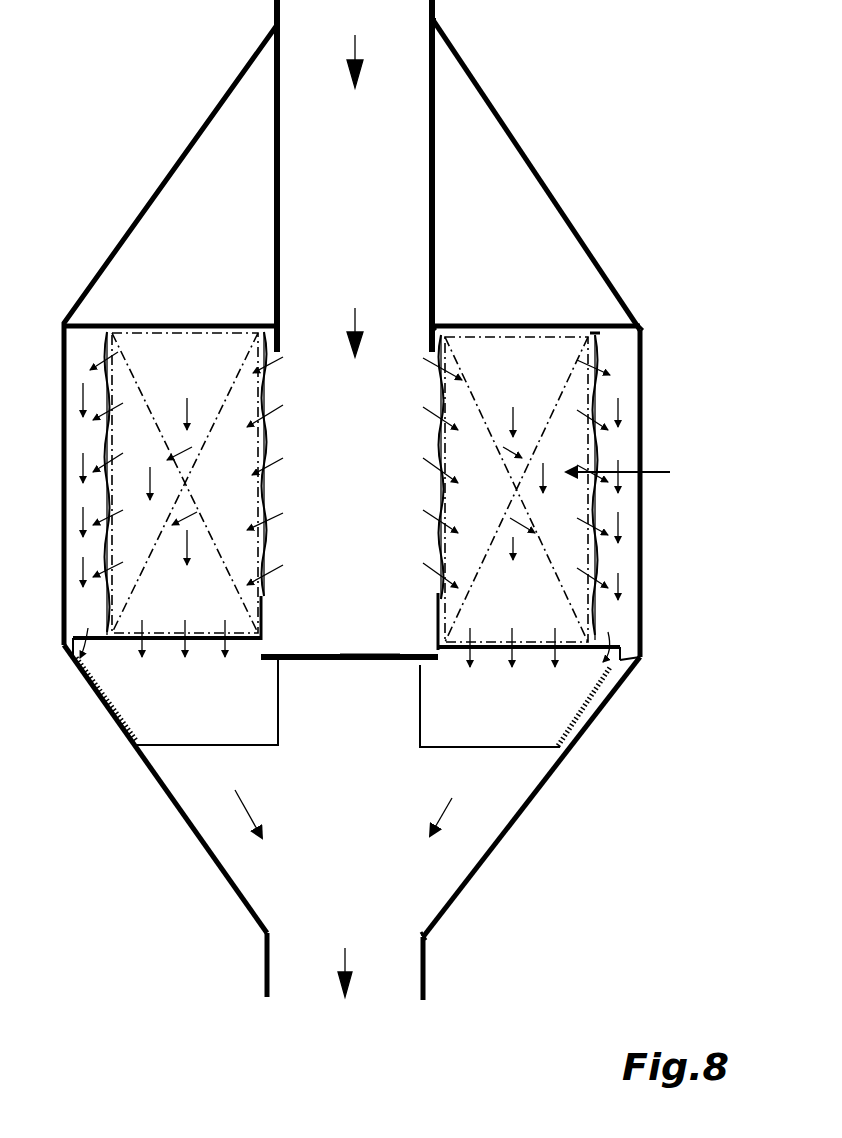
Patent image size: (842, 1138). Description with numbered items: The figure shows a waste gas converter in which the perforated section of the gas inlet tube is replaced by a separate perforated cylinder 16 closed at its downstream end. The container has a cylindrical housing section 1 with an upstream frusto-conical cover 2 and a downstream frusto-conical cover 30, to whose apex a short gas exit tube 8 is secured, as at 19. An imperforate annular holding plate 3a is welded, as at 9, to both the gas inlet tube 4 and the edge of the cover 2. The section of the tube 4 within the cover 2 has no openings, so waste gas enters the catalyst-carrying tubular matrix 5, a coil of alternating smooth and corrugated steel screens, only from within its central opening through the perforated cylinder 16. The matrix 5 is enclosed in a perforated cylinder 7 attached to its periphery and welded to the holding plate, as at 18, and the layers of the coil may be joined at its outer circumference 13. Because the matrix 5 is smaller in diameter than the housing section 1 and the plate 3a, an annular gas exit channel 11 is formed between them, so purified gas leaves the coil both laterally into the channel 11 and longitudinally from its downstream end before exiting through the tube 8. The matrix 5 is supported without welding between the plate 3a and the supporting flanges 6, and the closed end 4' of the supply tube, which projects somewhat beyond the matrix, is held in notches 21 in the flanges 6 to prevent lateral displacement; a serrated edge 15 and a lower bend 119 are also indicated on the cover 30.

The cylindrical housing section 1 is at (640, 515).
The frusto-conical cover 2 is at (472, 76).
The annular holding plate 3a is at (533, 326).
The gas inlet tube 4 is at (425, 176).
The closed downstream end of the tube 4' is at (370, 676).
The catalyst-carrying tubular matrix 5 is at (627, 468).
The supporting flanges 6 is at (585, 665).
The perforated cylinder 7 is at (595, 617).
The gas exit tube 8 is at (422, 992).
The weld 9 is at (433, 330).
The annular gas exit channel 11 is at (625, 423).
The outer circumference of the coil 13 is at (440, 620).
The serrated edge 15 is at (603, 708).
The perforated cylinder 16 is at (328, 640).
The weld 18 is at (600, 338).
The securing point of exit tube 19 is at (437, 19).
The notches 21 is at (448, 668).
The frusto-conical cover 30 is at (458, 900).
The lower bend 119 is at (427, 945).